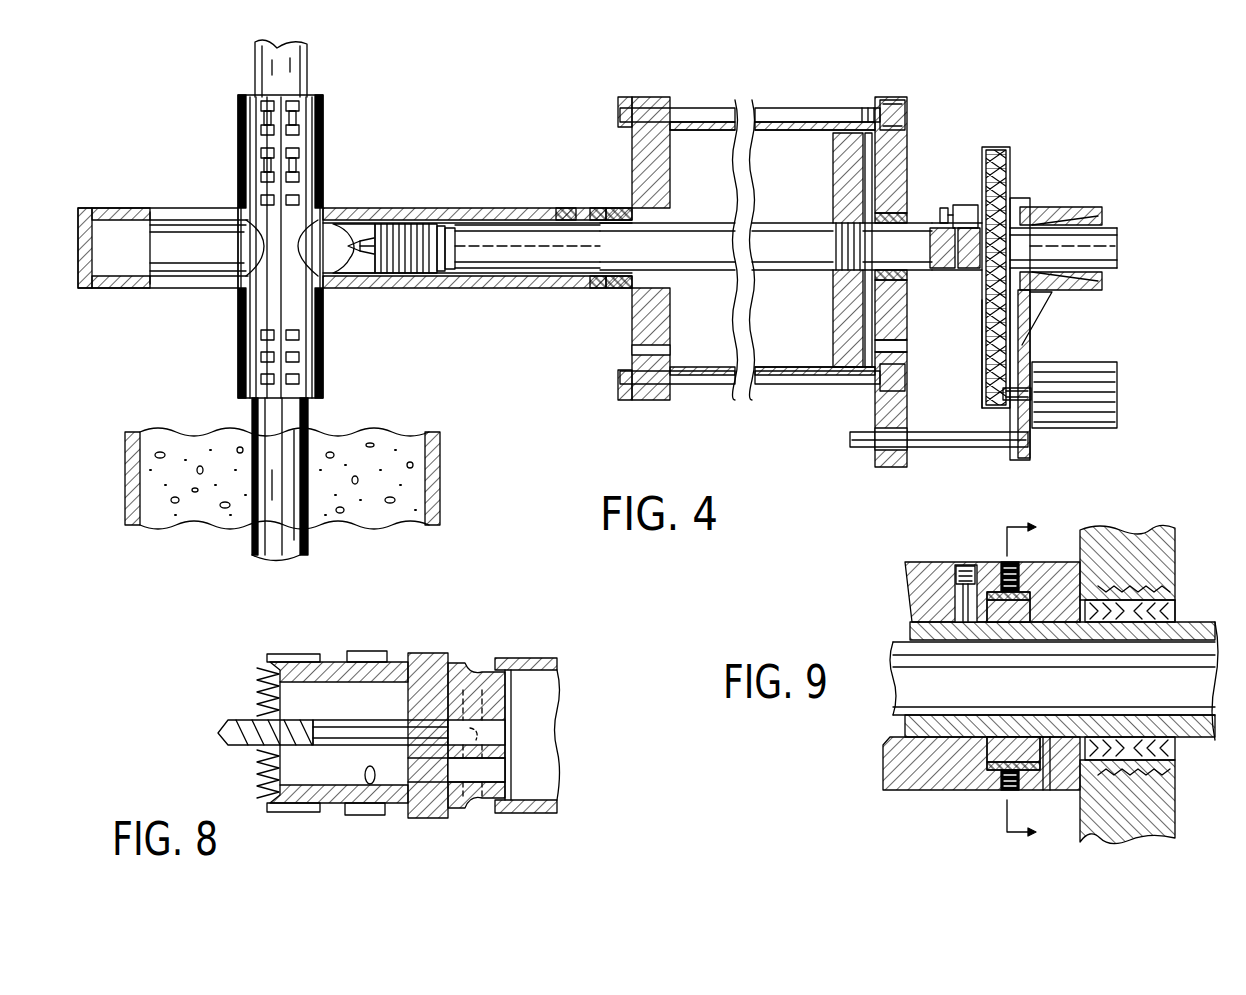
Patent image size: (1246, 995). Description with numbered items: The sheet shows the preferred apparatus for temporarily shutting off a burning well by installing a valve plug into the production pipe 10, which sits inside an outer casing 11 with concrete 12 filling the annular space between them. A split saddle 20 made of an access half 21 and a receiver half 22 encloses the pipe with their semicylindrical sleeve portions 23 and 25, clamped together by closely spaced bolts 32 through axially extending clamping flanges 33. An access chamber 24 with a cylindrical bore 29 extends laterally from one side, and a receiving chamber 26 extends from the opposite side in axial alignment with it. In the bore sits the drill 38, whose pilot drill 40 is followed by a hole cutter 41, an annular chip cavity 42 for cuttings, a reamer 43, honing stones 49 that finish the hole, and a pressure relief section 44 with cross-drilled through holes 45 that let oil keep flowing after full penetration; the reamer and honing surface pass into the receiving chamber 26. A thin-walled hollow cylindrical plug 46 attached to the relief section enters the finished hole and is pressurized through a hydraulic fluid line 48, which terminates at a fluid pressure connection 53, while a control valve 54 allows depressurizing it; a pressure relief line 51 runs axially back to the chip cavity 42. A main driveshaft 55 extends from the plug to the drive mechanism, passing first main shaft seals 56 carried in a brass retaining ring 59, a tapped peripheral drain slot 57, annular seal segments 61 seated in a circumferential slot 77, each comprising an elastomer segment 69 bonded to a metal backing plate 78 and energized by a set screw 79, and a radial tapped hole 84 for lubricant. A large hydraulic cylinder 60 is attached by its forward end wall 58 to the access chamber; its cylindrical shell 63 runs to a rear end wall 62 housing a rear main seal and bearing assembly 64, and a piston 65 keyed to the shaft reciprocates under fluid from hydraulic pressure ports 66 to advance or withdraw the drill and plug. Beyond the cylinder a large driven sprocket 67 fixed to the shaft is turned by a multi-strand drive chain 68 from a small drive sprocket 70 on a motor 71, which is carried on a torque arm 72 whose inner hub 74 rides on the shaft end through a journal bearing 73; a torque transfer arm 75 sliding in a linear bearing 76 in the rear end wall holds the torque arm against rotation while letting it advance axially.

In FIG. 4, the production pipe 10 is at (252, 58).
In FIG. 4, the outer casing 11 is at (440, 444).
In FIG. 4, the concrete 12 is at (370, 440).
In FIG. 9, the concrete 12 is at (1037, 681).
In FIG. 4, the saddle 20 is at (328, 108).
In FIG. 4, the access half 21 is at (322, 368).
In FIG. 4, the receiver half 22 is at (240, 348).
In FIG. 4, the semicylindrical sleeve portion 23 is at (320, 142).
In FIG. 4, the access chamber 24 is at (392, 210).
In FIG. 4, the semicylindrical sleeve portion 25 is at (248, 165).
In FIG. 4, the receiving chamber 26 is at (120, 208).
In FIG. 4, the cylindrical bore 29 is at (365, 288).
In FIG. 9, the cylindrical bore 29 is at (912, 636).
In FIG. 4, the bolts 32 is at (298, 176).
In FIG. 4, the clamping flanges 33 is at (262, 110).
In FIG. 4, the drill 38 is at (405, 290).
In FIG. 8, the drill 38 is at (338, 645).
In FIG. 8, the pilot drill 40 is at (225, 720).
In FIG. 8, the hole cutter 41 is at (262, 680).
In FIG. 8, the annular chip cavity 42 is at (368, 784).
In FIG. 8, the reamer 43 is at (305, 654).
In FIG. 4, the pressure relief section 44 is at (462, 288).
In FIG. 8, the pressure relief section 44 is at (472, 660).
In FIG. 8, the through holes 45 is at (520, 722).
In FIG. 4, the cylindrical plug 46 is at (532, 224).
In FIG. 8, the cylindrical plug 46 is at (545, 658).
In FIG. 9, the hydraulic fluid line 48 is at (1198, 716).
In FIG. 8, the honing stones 49 is at (378, 650).
In FIG. 8, the pressure relief line 51 is at (505, 770).
In FIG. 4, the fluid pressure connection 53 is at (960, 270).
In FIG. 4, the control valve 54 is at (962, 205).
In FIG. 4, the main driveshaft 55 is at (700, 264).
In FIG. 9, the main driveshaft 55 is at (900, 756).
In FIG. 4, the first main shaft seals 56 is at (665, 215).
In FIG. 9, the first main shaft seals 56 is at (1168, 614).
In FIG. 4, the peripheral drain slot 57 is at (600, 288).
In FIG. 9, the peripheral drain slot 57 is at (1060, 728).
In FIG. 4, the forward end wall 58 is at (632, 306).
In FIG. 9, the forward end wall 58 is at (1150, 562).
In FIG. 9, the annular retaining ring 59 is at (1165, 640).
In FIG. 4, the hydraulic cylinder 60 is at (800, 110).
In FIG. 4, the annular seal segments 61 is at (606, 208).
In FIG. 9, the annular seal segments 61 is at (1010, 742).
In FIG. 4, the rear end wall 62 is at (840, 186).
In FIG. 4, the cylindrical shell 63 is at (768, 132).
In FIG. 4, the rear main seal and bearing assembly 64 is at (910, 226).
In FIG. 4, the piston 65 is at (840, 298).
In FIG. 4, the hydraulic pressure ports 66 is at (670, 350).
In FIG. 4, the driven sprocket 67 is at (1012, 160).
In FIG. 4, the drive chain 68 is at (985, 345).
In FIG. 9, the elastomer segment 69 is at (975, 790).
In FIG. 4, the drive sprocket 70 is at (985, 395).
In FIG. 4, the motor 71 is at (1095, 398).
In FIG. 4, the torque arm 72 is at (1025, 335).
In FIG. 4, the journal bearing 73 is at (1115, 222).
In FIG. 4, the inner hub 74 is at (1068, 207).
In FIG. 4, the torque transfer arm 75 is at (970, 448).
In FIG. 4, the linear bearing 76 is at (892, 468).
In FIG. 9, the annular circumferential slot 77 is at (1005, 622).
In FIG. 9, the metal backing plate 78 is at (1020, 790).
In FIG. 9, the set screw 79 is at (1008, 562).
In FIG. 4, the radial tapped hole 84 is at (562, 208).
In FIG. 9, the radial tapped hole 84 is at (960, 597).